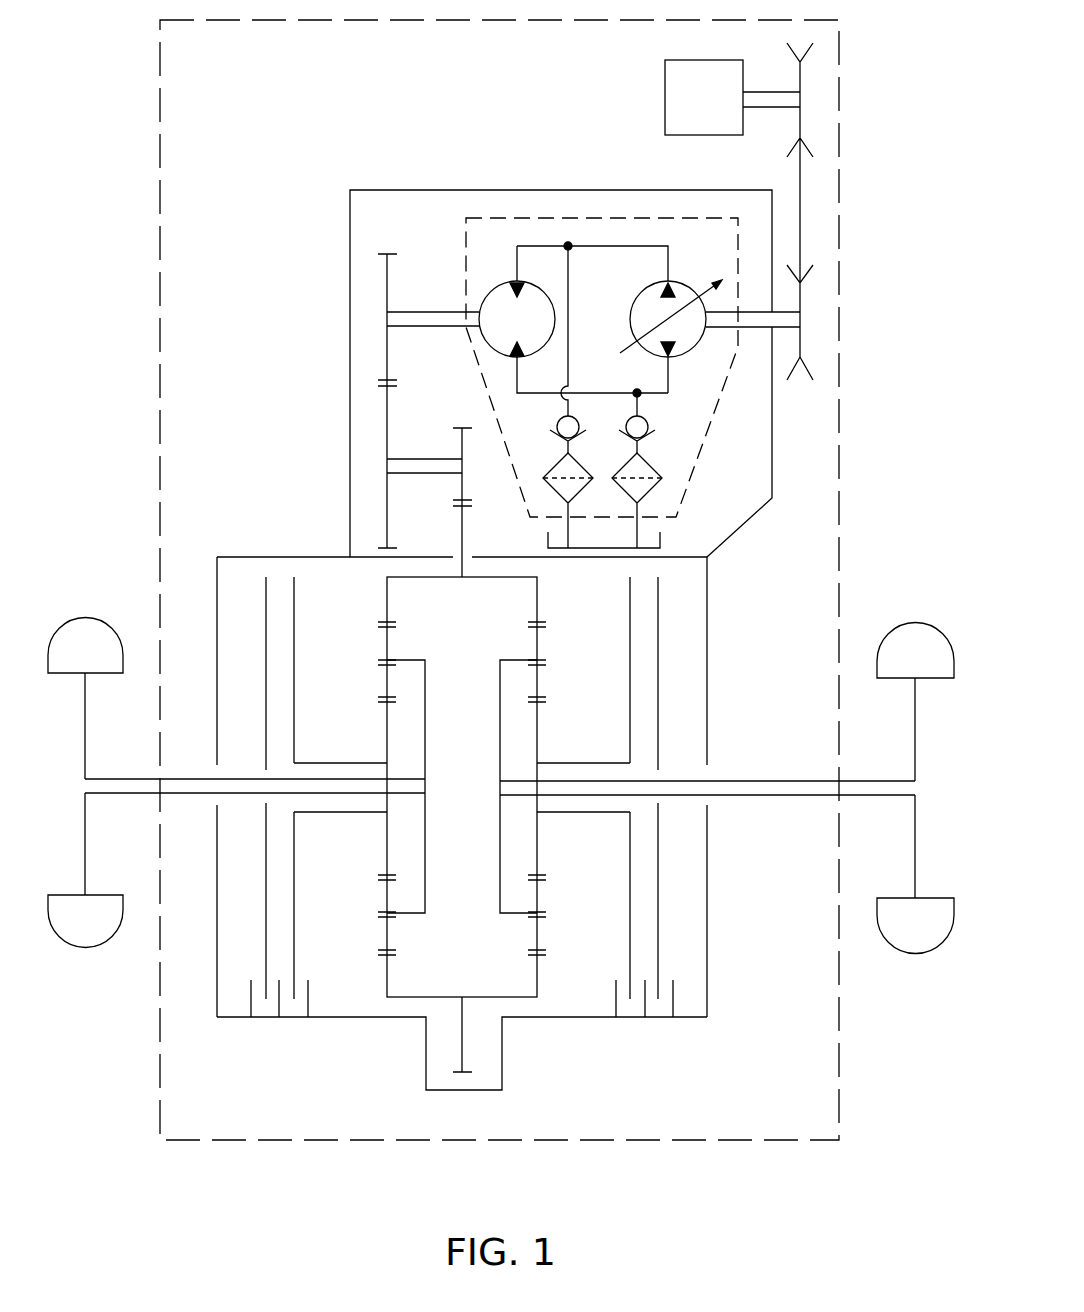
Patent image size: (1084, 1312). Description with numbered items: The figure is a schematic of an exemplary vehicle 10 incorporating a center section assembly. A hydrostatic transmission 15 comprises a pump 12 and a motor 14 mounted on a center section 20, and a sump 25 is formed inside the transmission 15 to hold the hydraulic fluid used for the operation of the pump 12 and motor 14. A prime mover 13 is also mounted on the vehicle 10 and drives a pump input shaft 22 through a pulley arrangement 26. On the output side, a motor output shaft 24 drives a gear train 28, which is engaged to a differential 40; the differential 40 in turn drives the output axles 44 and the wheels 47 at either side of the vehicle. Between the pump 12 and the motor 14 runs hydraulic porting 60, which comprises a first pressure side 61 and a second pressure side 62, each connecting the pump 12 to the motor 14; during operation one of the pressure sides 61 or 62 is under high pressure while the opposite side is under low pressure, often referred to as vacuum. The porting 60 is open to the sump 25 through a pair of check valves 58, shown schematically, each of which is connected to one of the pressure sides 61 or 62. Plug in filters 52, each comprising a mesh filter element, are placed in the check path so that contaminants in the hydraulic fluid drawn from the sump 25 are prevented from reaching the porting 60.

The vehicle 10 is at (115, 149).
The pump 12 is at (636, 300).
The prime mover 13 is at (665, 100).
The motor 14 is at (487, 341).
The hydrostatic transmission 15 is at (748, 518).
The center section 20 is at (440, 260).
The pump input shaft 22 is at (757, 312).
The motor output shaft 24 is at (415, 312).
The sump 25 is at (663, 540).
The pulley arrangement 26 is at (818, 204).
The gear train 28 is at (368, 420).
The differential 40 is at (240, 557).
The output axles 44 is at (137, 778).
The wheels 47 is at (87, 948).
The plug in filters 52 is at (653, 465).
The check valves 58 is at (650, 416).
The hydraulic porting 60 is at (668, 246).
The first pressure side 61 is at (591, 245).
The second pressure side 62 is at (533, 395).